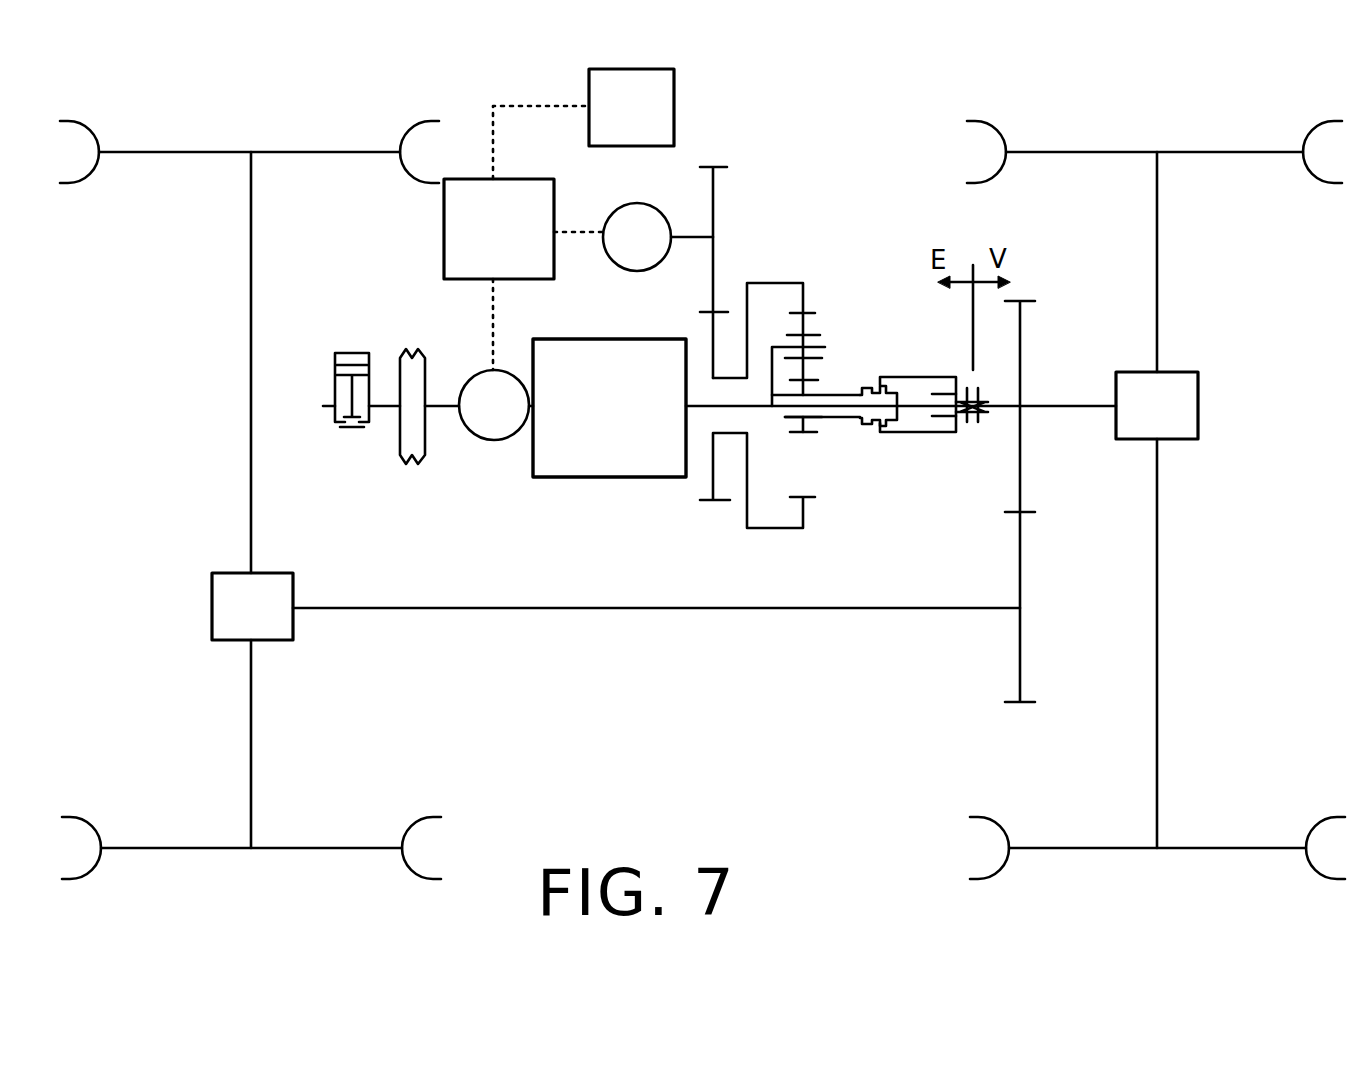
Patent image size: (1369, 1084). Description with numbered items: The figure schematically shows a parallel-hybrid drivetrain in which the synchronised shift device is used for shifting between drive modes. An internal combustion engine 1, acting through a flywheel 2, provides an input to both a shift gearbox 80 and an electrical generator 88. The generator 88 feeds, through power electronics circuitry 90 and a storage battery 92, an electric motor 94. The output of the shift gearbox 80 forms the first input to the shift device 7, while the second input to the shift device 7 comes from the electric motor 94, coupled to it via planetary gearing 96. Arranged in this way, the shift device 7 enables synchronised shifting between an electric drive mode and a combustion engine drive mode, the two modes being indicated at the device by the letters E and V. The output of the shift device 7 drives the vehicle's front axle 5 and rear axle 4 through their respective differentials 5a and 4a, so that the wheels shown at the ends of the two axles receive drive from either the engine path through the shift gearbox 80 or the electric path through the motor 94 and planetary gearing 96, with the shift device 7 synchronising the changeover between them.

The internal combustion engine 1 is at (335, 356).
The flywheel 2 is at (403, 352).
The rear axle 4 is at (1162, 630).
The differential 4a is at (1185, 372).
The front axle 5 is at (250, 312).
The differential 5a is at (215, 607).
The shift device 7 is at (911, 434).
The shift gearbox 80 is at (605, 478).
The electrical generator 88 is at (486, 440).
The power electronics circuitry 90 is at (444, 233).
The storage battery 92 is at (672, 103).
The electric motor 94 is at (637, 272).
The planetary gearing 96 is at (812, 275).